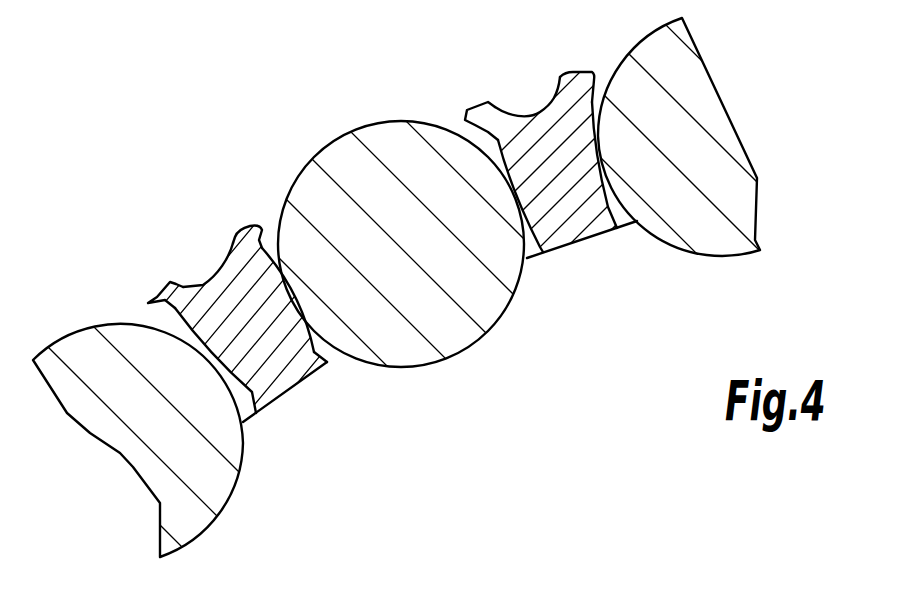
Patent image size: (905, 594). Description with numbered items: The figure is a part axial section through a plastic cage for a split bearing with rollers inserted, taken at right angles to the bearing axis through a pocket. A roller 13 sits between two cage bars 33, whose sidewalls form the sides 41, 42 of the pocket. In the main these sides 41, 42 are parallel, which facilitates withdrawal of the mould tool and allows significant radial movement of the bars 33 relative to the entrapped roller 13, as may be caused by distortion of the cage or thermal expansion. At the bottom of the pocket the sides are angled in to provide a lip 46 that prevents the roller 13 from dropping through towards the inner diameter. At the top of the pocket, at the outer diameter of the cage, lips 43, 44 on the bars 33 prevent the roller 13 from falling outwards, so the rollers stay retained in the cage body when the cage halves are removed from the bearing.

The roller 13 is at (402, 141).
The bar 33 is at (284, 372).
The side of the pocket 41 is at (497, 108).
The side of the pocket 42 is at (557, 93).
The lip 43 is at (148, 301).
The lip 44 is at (253, 227).
The lip 46 is at (324, 366).